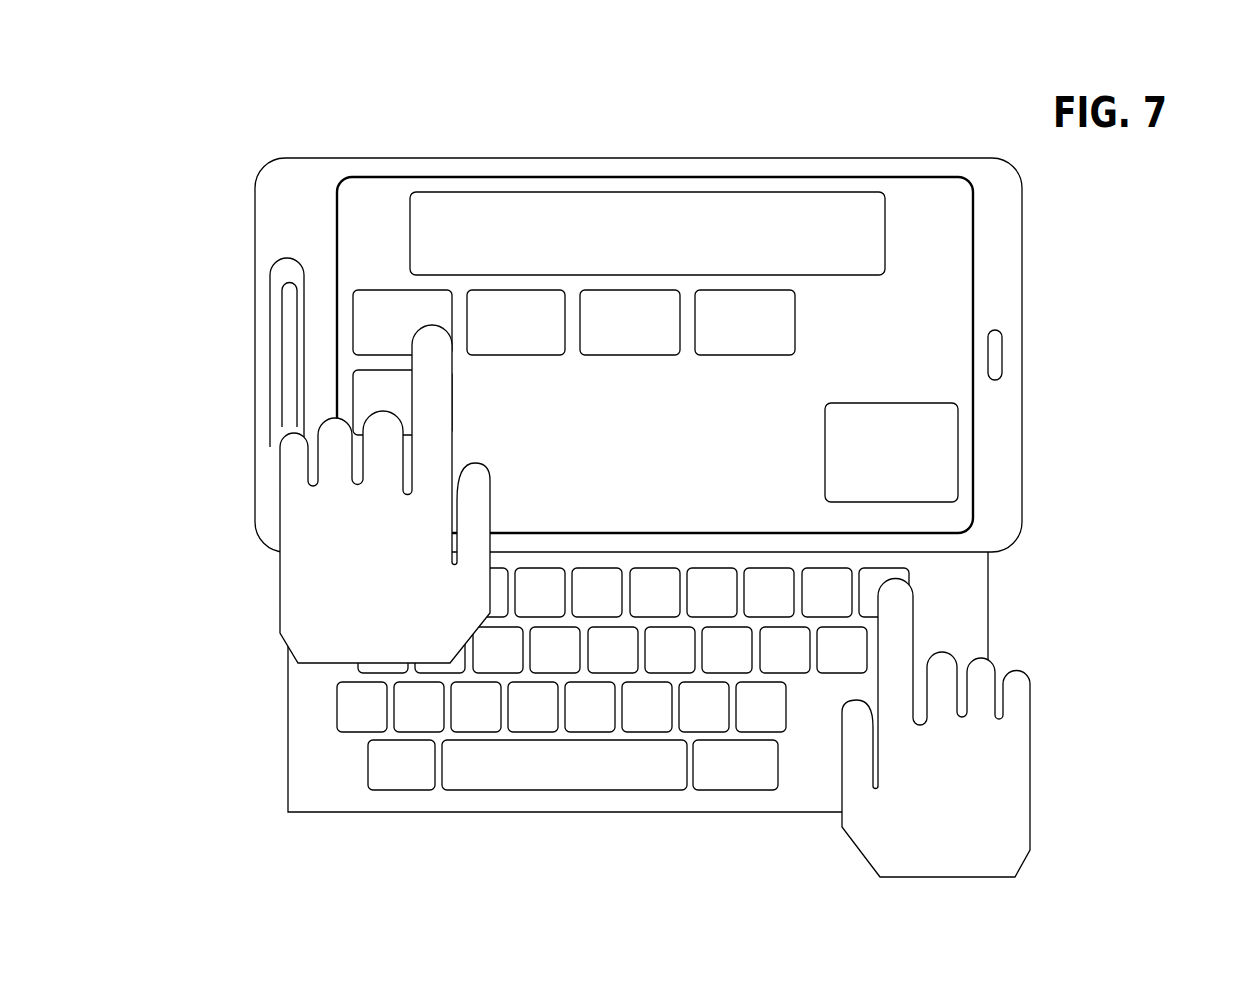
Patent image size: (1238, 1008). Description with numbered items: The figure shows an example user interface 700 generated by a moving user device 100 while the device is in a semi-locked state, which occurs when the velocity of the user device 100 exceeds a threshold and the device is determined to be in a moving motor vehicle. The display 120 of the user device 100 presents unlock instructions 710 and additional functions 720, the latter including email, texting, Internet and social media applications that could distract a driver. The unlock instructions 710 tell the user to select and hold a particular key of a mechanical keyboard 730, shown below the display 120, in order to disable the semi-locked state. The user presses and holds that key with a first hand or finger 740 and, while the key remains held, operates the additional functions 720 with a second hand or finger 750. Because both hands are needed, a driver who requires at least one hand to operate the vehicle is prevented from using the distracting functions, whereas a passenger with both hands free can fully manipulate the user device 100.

The user interface 700 is at (178, 71).
The user device 100 is at (255, 288).
The display 120 is at (332, 223).
The unlock instructions 710 is at (826, 453).
The additional functions 720 is at (950, 272).
The mechanical keyboard 730 is at (955, 592).
The first hand or finger 740 is at (1003, 797).
The second hand or finger 750 is at (297, 583).